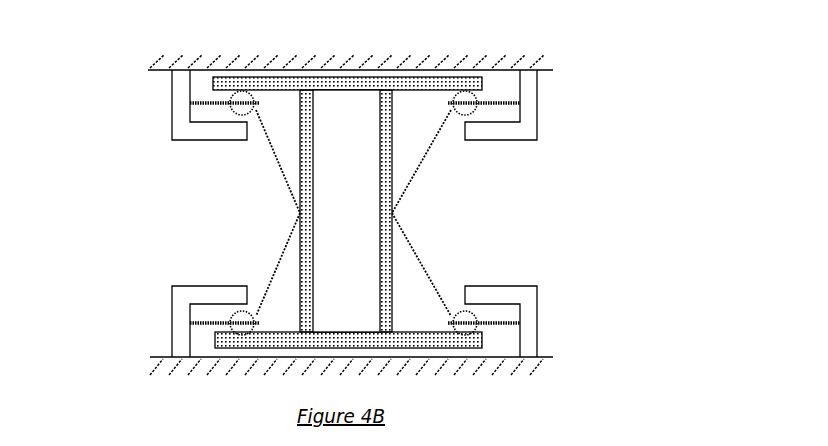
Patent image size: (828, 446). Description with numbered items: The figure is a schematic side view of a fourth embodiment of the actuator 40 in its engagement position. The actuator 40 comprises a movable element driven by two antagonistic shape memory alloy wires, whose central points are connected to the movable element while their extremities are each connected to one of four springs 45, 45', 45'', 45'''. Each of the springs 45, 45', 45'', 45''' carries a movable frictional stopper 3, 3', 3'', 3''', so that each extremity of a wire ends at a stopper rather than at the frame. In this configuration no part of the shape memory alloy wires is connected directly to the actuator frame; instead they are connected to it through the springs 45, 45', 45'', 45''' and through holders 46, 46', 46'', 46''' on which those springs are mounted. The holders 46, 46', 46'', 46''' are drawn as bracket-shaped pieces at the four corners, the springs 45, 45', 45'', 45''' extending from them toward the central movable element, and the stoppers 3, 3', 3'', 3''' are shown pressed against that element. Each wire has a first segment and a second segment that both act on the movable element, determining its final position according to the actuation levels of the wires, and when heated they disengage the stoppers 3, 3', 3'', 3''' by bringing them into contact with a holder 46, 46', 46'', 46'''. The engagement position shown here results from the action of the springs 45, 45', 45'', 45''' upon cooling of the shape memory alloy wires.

The actuator 40 is at (577, 160).
The spring 45 is at (180, 67).
The spring 45' is at (176, 349).
The spring 45'' is at (510, 64).
The spring 45''' is at (543, 358).
The holder 46 is at (164, 108).
The holder 46' is at (165, 315).
The holder 46'' is at (536, 295).
The holder 46''' is at (558, 80).
The movable stopper 3 is at (250, 161).
The movable stopper 3' is at (233, 264).
The movable stopper 3'' is at (434, 264).
The movable stopper 3''' is at (465, 160).